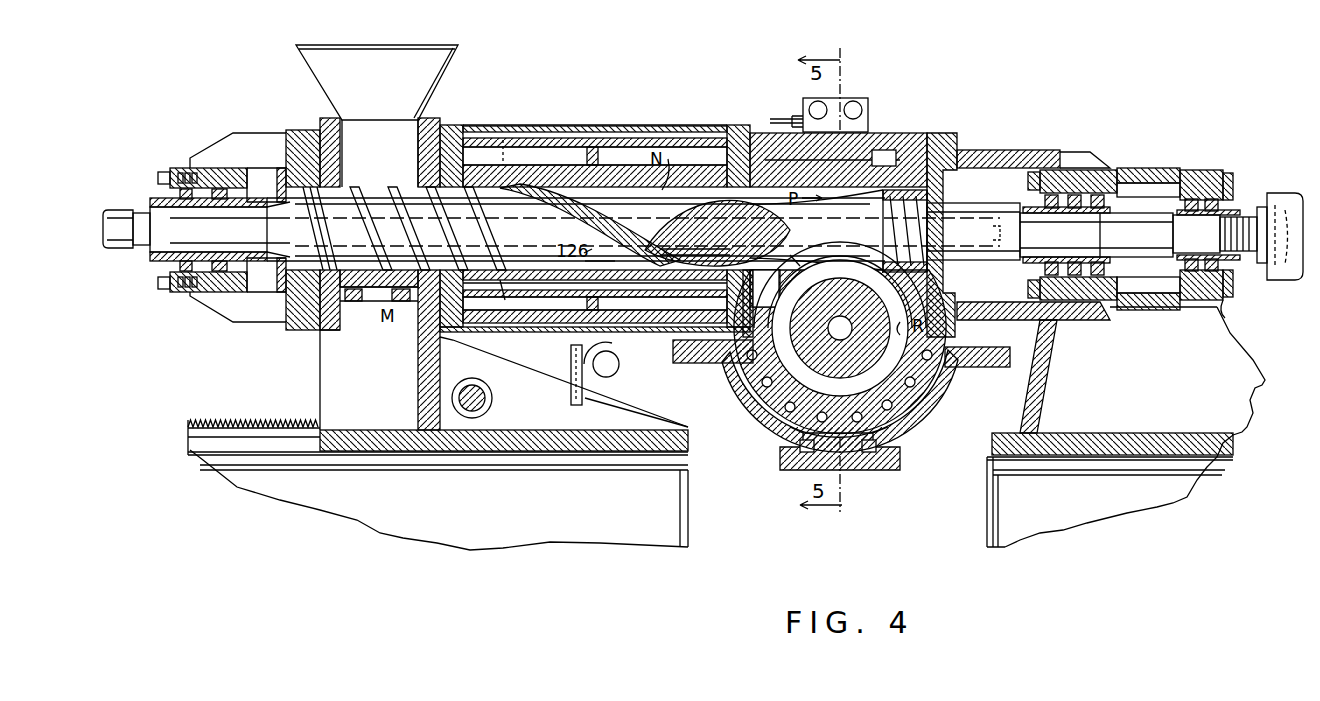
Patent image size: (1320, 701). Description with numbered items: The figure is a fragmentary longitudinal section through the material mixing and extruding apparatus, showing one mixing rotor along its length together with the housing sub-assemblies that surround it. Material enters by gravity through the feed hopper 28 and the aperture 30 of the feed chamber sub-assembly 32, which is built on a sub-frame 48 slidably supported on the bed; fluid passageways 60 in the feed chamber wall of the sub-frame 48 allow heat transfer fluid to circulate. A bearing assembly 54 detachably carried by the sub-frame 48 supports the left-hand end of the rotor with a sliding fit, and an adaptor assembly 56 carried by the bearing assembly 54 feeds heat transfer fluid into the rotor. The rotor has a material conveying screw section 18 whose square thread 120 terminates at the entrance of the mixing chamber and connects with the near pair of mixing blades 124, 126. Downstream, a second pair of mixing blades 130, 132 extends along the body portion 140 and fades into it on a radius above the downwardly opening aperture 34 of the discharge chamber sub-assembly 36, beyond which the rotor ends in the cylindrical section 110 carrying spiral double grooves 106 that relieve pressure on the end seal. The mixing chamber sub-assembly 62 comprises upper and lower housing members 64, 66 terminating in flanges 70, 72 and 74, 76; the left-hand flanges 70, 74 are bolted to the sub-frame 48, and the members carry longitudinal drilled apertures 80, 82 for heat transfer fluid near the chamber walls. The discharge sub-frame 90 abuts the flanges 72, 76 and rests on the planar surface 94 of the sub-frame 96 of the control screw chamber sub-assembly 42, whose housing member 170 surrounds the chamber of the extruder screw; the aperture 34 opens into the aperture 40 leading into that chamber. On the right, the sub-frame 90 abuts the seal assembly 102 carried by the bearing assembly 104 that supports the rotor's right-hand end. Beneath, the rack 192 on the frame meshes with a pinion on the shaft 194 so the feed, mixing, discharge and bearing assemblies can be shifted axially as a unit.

The material conveying screw section 18 is at (362, 194).
The feed hopper 28 is at (380, 47).
The aperture 30 is at (414, 137).
The feed chamber sub-assembly 32 is at (322, 116).
The downwardly opening aperture 34 is at (868, 270).
The discharge chamber sub-assembly 36 is at (870, 133).
The aperture 40 is at (894, 280).
The control screw chamber sub-assembly 42 is at (948, 424).
The sub-frame 48 is at (418, 387).
The bearing assembly 54 is at (182, 168).
The adaptor assembly 56 is at (122, 205).
The fluid passageways 60 is at (358, 296).
The mixing chamber sub-assembly 62 is at (556, 119).
The upper housing member 64 is at (558, 300).
The lower housing member 66 is at (630, 140).
The flange 70 is at (450, 338).
The flange 72 is at (752, 289).
The flange 74 is at (448, 111).
The flange 76 is at (740, 127).
The drilled aperture 80 is at (497, 296).
The drilled aperture 82 is at (503, 134).
The sub-frame 90 is at (920, 133).
The planar surface 94 is at (782, 270).
The sub-frame 96 is at (1002, 342).
The seal assembly 102 is at (984, 150).
The bearing assembly 104 is at (1132, 166).
The spiral double grooves 106 is at (925, 216).
The cylindrical section 110 is at (887, 159).
The thread 120 is at (478, 217).
The mixing blade 124 is at (552, 207).
The mixing blade 126 is at (408, 184).
The mixing blade 130 is at (680, 251).
The mixing blade 132 is at (708, 215).
The body portion 140 is at (588, 261).
The housing member 170 is at (760, 442).
The rack 192 is at (246, 417).
The shaft 194 is at (493, 401).